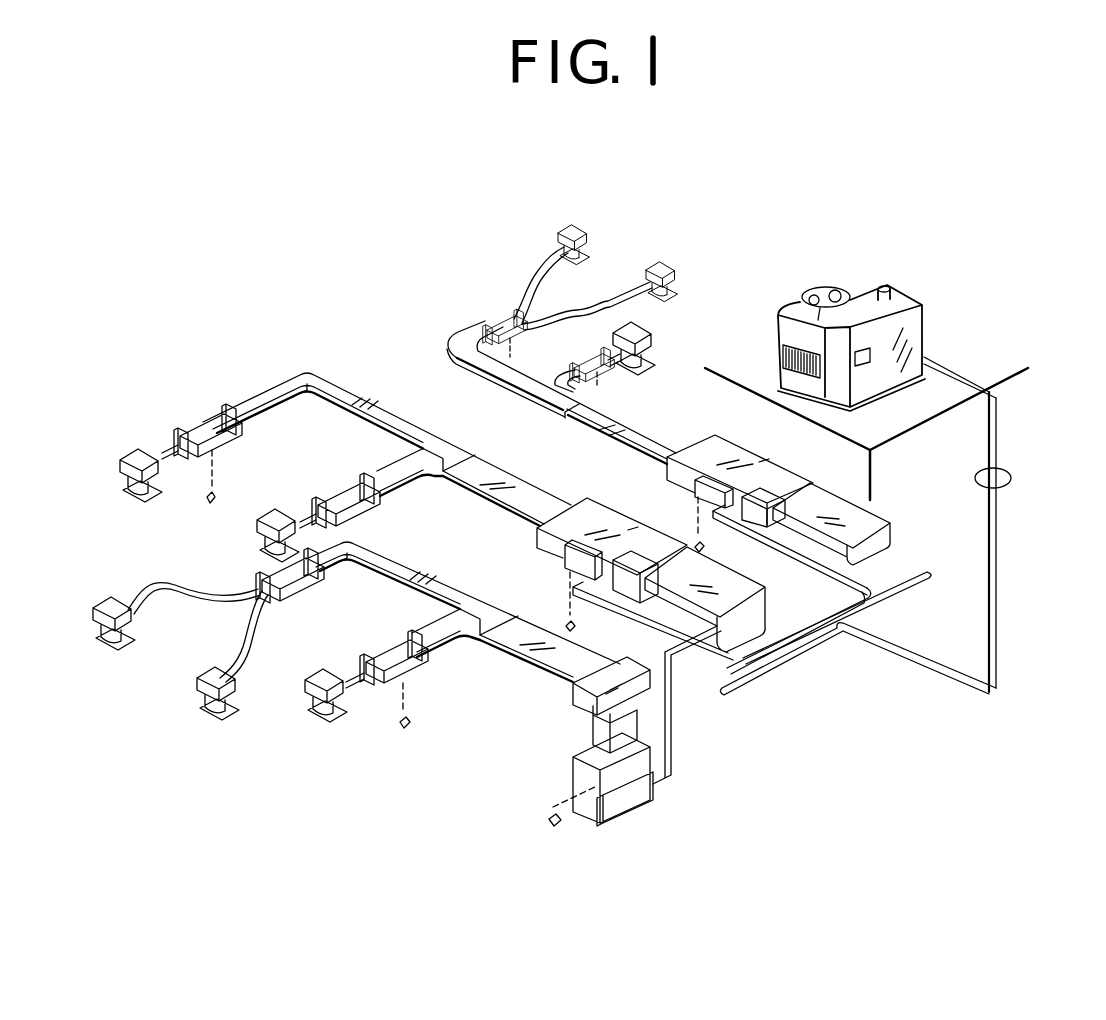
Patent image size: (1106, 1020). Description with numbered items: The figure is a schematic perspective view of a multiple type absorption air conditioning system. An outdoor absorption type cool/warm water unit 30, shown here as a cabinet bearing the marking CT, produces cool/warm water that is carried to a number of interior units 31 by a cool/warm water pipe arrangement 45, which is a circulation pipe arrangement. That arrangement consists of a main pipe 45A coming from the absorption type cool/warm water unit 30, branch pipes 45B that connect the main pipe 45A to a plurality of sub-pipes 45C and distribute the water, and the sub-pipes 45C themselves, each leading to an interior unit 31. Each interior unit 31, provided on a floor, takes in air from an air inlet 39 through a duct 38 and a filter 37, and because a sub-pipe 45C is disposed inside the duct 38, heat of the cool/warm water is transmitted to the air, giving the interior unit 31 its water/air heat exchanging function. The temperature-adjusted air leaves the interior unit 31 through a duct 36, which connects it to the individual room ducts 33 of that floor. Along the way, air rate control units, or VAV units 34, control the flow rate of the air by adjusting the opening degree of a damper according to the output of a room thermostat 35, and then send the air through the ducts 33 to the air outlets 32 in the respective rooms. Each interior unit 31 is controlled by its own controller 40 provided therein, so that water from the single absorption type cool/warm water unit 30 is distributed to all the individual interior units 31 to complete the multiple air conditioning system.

The absorption type cool/warm water unit 30 is at (925, 336).
The control terminal CT is at (852, 290).
The interior unit 31 is at (737, 453).
The air outlet 32 is at (572, 230).
The duct 33 is at (613, 295).
The air rate control unit (VAV unit) 34 is at (500, 322).
The room thermostat 35 is at (217, 493).
The duct 36 is at (640, 418).
The filter 37 is at (768, 497).
The duct 38 is at (863, 510).
The air inlet 39 is at (887, 563).
The controller 40 is at (710, 544).
The cool/warm water pipe arrangement 45 is at (1105, 496).
The main pipe 45A is at (1000, 628).
The branch pipe 45B is at (753, 688).
The sub-pipe 45C is at (690, 677).